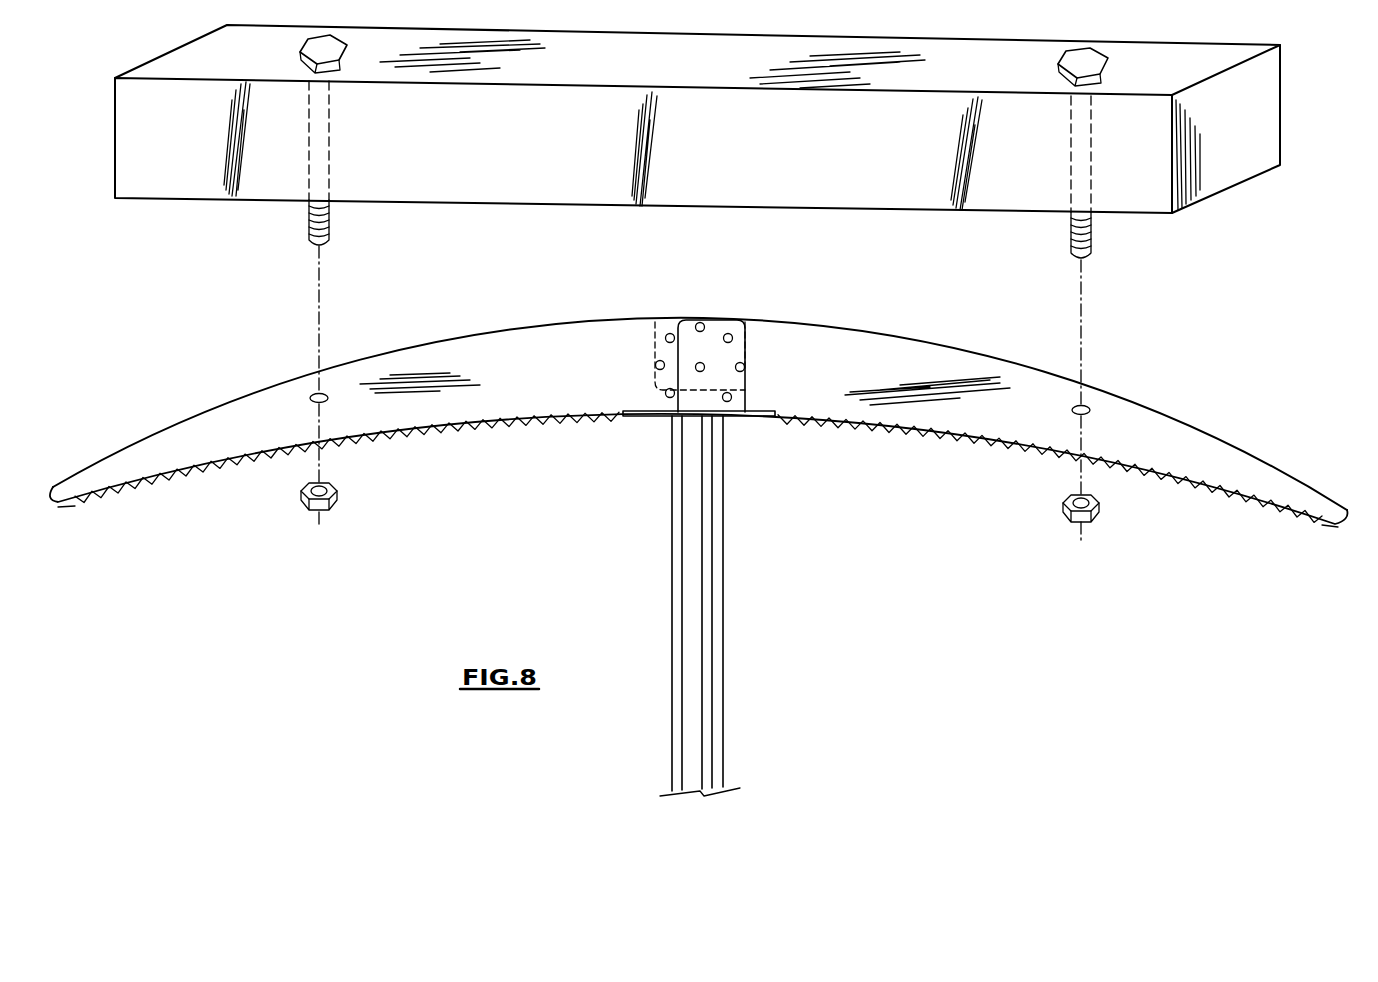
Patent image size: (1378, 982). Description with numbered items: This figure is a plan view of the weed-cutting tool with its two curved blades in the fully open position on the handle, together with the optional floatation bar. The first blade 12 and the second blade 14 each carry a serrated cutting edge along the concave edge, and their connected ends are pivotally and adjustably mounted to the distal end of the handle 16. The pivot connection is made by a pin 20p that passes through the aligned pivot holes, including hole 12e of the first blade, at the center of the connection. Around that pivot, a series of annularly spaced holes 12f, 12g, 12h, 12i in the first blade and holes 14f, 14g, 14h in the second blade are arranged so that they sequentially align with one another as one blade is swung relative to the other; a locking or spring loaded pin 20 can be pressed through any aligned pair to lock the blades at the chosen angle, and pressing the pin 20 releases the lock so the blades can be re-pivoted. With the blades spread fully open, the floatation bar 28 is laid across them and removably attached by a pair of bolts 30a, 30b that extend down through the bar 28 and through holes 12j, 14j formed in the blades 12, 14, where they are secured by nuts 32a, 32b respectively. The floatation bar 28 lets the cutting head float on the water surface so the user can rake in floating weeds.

The first blade 12 is at (991, 376).
The second blade 14 is at (699, 401).
The handle 16 is at (690, 529).
The pin 20 is at (699, 322).
The pin 20p is at (712, 368).
The floatation bar 28 is at (585, 178).
The bolt 30a is at (312, 232).
The bolt 30b is at (1070, 238).
The nut 32a is at (306, 503).
The nut 32b is at (1066, 515).
The hole 12e is at (700, 372).
The hole 12f is at (731, 401).
The hole 12g is at (744, 368).
The hole 12h is at (731, 336).
The hole 12i is at (700, 322).
The hole 12j is at (1084, 410).
The hole 14f is at (668, 398).
The hole 14g is at (656, 364).
The hole 14h is at (670, 333).
The hole 14j is at (313, 398).